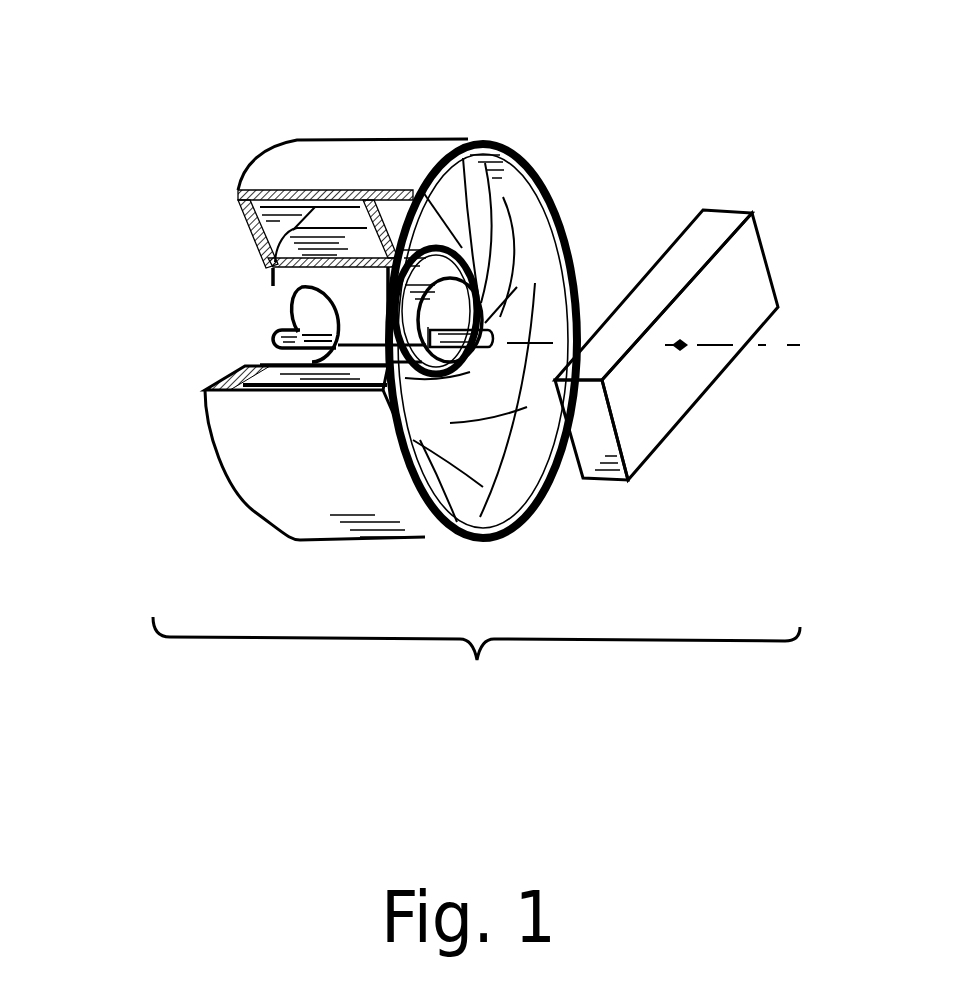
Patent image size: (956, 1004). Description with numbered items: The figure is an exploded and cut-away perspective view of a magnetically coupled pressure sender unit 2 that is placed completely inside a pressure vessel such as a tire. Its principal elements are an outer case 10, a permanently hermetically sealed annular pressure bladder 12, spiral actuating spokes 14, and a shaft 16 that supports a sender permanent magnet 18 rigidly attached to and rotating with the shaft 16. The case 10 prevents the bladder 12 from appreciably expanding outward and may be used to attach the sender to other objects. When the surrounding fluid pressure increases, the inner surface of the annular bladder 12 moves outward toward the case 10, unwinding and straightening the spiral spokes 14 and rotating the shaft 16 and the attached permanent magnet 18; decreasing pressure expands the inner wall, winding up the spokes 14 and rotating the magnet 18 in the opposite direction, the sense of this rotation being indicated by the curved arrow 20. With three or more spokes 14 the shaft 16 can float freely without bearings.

The magnetically coupled pressure sender unit 2 is at (476, 674).
The outer case 10 is at (545, 172).
The annular pressure bladder 12 is at (237, 372).
The spiral actuating spokes 14 is at (272, 272).
The shaft 16 is at (270, 335).
The sender permanent magnet 18 is at (692, 405).
The direction of rotation 20 is at (412, 168).